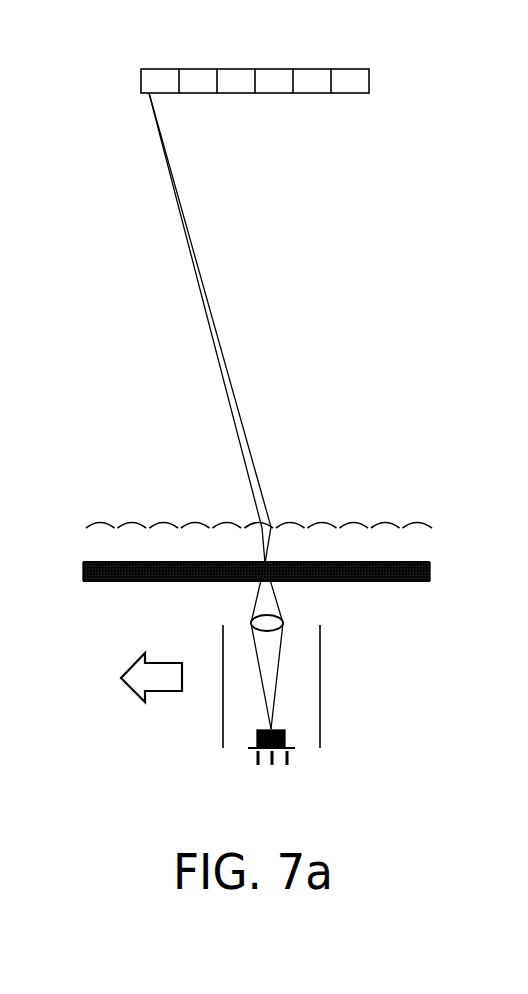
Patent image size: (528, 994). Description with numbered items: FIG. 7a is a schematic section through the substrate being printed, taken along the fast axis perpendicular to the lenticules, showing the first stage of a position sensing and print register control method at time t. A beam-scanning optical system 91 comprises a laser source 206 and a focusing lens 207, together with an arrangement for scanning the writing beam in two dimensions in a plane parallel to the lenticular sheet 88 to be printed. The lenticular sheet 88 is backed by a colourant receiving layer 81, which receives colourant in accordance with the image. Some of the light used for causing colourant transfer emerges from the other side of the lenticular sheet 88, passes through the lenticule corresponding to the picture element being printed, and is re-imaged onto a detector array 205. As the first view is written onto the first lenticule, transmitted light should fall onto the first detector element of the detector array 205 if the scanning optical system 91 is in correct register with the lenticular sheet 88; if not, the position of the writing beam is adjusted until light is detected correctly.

The detector array 205 is at (371, 80).
The lenticular sheet 88 is at (400, 506).
The colourant receiving layer 81 is at (102, 583).
The focusing lens 207 is at (288, 620).
The beam-scanning optical system 91 is at (332, 678).
The laser source 206 is at (240, 753).